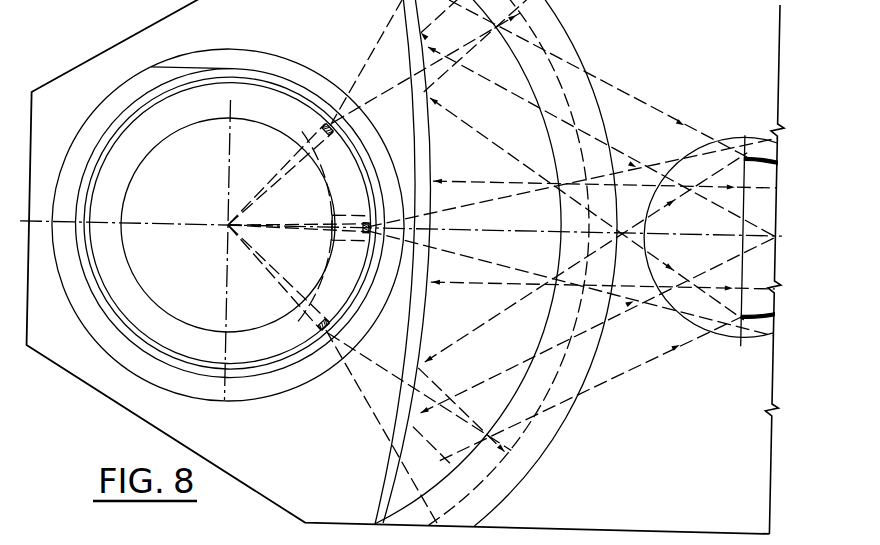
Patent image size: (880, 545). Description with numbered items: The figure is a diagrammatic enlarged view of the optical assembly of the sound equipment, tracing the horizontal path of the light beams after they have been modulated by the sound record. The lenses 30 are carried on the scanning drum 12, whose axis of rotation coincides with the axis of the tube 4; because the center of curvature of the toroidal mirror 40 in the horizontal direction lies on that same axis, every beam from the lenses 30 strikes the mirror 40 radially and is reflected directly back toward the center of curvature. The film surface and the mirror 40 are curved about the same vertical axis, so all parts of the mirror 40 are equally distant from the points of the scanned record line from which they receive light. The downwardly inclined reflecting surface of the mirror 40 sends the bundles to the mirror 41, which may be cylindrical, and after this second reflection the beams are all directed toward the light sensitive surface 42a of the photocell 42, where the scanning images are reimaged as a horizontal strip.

The tube 4 is at (121, 87).
The scanning drum 12 is at (126, 172).
The lenses 30 is at (331, 127).
The toroidal mirror 40 is at (529, 431).
The mirror 41 is at (423, 310).
The photocell 42 is at (730, 328).
The light sensitive surface 42a is at (754, 143).